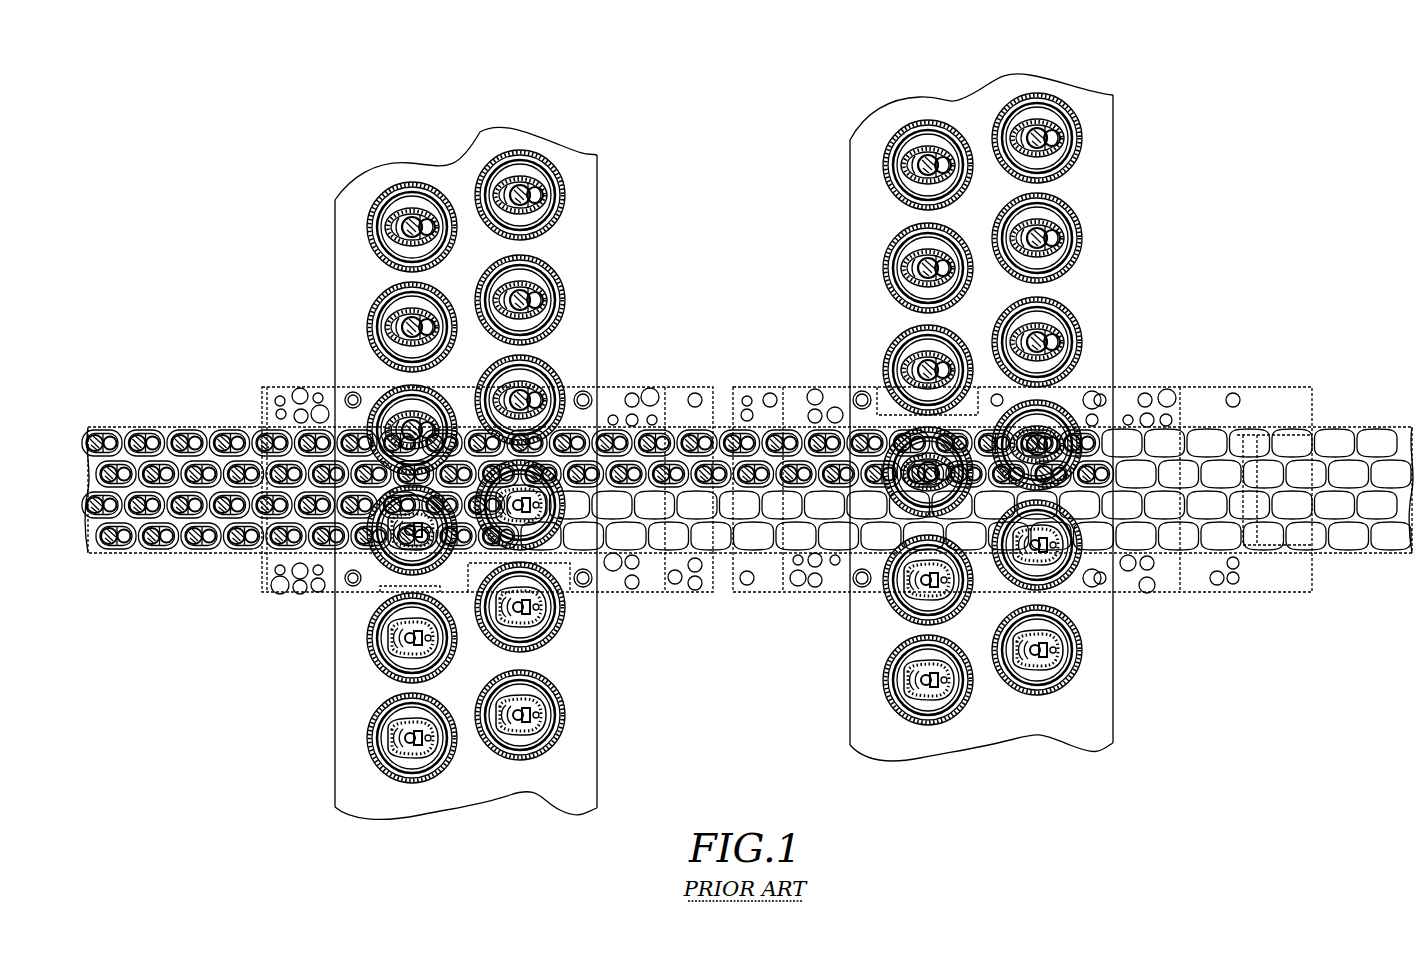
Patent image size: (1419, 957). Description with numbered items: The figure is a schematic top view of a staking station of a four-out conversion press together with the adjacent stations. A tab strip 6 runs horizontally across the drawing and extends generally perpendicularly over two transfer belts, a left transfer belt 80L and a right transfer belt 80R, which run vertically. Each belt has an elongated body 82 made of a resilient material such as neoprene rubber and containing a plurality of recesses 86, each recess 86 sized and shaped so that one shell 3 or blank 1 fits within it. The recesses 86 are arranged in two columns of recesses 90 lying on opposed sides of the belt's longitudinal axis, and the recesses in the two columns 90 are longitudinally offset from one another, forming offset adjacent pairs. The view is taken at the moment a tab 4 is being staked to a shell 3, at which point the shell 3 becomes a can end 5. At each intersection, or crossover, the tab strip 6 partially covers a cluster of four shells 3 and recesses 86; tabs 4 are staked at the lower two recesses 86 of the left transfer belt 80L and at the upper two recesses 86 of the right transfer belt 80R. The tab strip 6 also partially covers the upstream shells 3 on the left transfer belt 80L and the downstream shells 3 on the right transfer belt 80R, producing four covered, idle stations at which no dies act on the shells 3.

The blank 1 is at (406, 776).
The shell 3 is at (1052, 667).
The tab 4 is at (385, 211).
The can end 5 is at (1058, 160).
The tab strip 6 is at (193, 553).
The left transfer belt 80L is at (385, 516).
The right transfer belt 80R is at (1008, 456).
The transfer belt body 82 is at (1113, 710).
The recess 86 is at (893, 700).
The column of recesses 90 is at (928, 82).